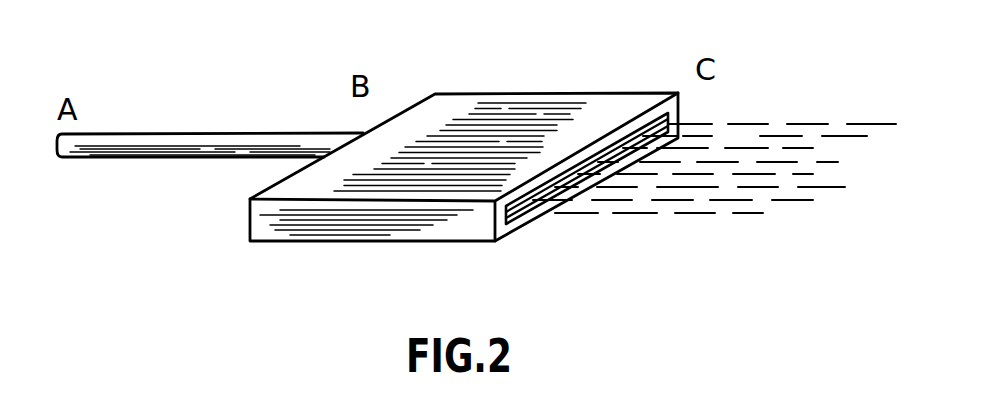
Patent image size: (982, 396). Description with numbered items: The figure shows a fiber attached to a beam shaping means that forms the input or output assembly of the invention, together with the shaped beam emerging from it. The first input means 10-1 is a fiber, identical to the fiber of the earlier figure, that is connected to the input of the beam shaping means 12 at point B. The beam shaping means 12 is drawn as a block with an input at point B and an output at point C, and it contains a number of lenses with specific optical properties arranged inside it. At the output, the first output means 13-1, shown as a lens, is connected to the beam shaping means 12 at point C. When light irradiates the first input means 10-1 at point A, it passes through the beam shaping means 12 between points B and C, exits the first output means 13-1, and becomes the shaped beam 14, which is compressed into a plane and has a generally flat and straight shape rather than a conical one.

The first input means 10-1 is at (110, 133).
The beam shaping means 12 is at (492, 92).
The first output means 13-1 is at (522, 210).
The shaped beam 14 is at (735, 124).